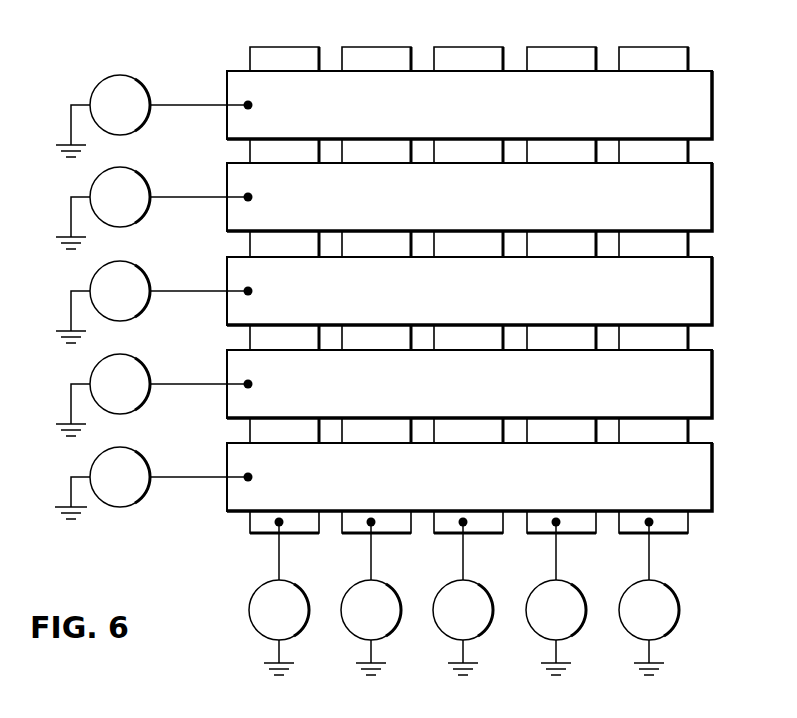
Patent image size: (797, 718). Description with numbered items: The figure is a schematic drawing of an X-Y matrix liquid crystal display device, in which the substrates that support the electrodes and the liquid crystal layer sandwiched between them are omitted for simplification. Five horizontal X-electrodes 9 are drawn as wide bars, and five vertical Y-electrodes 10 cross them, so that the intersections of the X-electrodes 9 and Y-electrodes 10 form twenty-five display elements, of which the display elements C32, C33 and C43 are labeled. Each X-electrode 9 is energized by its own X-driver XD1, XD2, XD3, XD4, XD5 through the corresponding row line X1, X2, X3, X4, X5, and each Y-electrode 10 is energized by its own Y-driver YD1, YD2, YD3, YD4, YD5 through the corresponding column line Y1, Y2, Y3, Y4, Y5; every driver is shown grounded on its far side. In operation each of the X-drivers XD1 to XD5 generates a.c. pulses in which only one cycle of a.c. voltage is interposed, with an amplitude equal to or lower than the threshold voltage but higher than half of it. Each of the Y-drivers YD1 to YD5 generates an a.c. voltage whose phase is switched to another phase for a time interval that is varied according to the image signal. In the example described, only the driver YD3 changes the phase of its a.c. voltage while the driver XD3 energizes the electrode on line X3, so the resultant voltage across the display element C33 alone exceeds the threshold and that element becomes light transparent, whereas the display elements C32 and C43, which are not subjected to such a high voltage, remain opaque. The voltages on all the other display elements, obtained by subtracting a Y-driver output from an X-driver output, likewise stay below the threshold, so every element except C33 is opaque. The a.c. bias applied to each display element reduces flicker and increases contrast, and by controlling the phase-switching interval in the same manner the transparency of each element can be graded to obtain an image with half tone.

The X-electrode 9 is at (698, 114).
The Y-electrode 10 is at (352, 58).
The X-driver XD1 is at (103, 116).
The X-driver XD2 is at (103, 208).
The X-driver XD3 is at (103, 302).
The X-driver XD4 is at (103, 395).
The X-driver XD5 is at (102, 483).
The Y-driver YD1 is at (279, 627).
The Y-driver YD2 is at (371, 627).
The Y-driver YD3 is at (463, 627).
The Y-driver YD4 is at (556, 627).
The Y-driver YD5 is at (649, 627).
The X-electrode line X1 is at (199, 121).
The X-electrode line X2 is at (199, 213).
The X-electrode line X3 is at (199, 307).
The X-electrode line X4 is at (199, 400).
The X-electrode line X5 is at (199, 493).
The Y-electrode line Y1 is at (296, 551).
The Y-electrode line Y2 is at (388, 551).
The Y-electrode line Y3 is at (480, 551).
The Y-electrode line Y4 is at (573, 551).
The Y-electrode line Y5 is at (666, 551).
The display element C32 is at (377, 287).
The display element C33 is at (473, 287).
The display element C43 is at (467, 385).